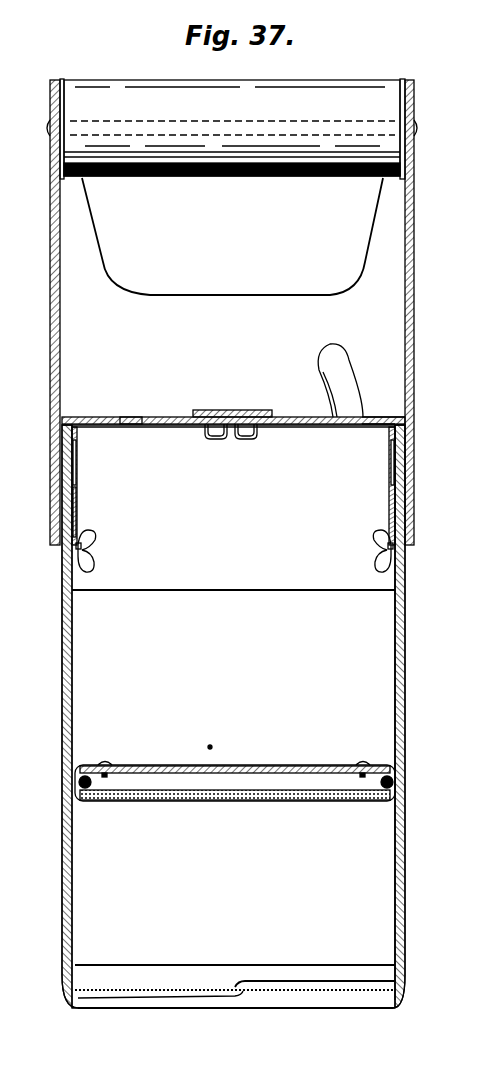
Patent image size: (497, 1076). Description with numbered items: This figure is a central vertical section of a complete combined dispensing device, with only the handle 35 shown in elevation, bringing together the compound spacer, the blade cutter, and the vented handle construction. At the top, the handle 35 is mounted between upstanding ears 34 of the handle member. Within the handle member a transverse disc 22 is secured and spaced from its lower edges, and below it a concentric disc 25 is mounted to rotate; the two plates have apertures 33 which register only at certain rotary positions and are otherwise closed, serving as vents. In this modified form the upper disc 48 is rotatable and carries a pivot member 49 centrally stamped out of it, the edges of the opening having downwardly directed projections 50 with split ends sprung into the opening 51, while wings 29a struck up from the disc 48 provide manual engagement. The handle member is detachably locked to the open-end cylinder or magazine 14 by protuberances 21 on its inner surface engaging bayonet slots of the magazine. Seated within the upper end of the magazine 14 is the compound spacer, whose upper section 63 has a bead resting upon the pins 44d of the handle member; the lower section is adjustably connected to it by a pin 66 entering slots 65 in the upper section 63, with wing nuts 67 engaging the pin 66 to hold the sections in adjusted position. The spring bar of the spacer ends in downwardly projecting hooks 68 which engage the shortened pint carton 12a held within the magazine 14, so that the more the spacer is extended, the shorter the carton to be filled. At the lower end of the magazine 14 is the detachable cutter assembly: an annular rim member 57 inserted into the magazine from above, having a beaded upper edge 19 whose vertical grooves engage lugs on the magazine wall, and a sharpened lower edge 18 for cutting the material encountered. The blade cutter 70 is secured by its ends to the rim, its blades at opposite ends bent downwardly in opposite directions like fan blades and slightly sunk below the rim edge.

The carton 12a is at (398, 878).
The open-end cylinder 14 is at (405, 870).
The lower edge 18 is at (340, 1012).
The beaded upper edge 19 is at (78, 972).
The protuberances 21 is at (393, 517).
The transverse disc 22 is at (378, 418).
The disc 25 is at (375, 427).
The wings 29a is at (338, 359).
The apertures 33 is at (128, 424).
The upstanding ears 34 is at (416, 291).
The handle 35 is at (315, 101).
The pins 44d is at (403, 456).
The upper disc 48 is at (160, 415).
The pivot member 49 is at (206, 441).
The downwardly directed projections 50 is at (255, 436).
The opening 51 is at (240, 441).
The annular rim member 57 is at (78, 998).
The upper section 63 is at (78, 477).
The slots 65 is at (78, 510).
The pin 66 is at (70, 553).
The wing nuts 67 is at (96, 563).
The hooks 68 is at (405, 784).
The blade cutter 70 is at (290, 985).